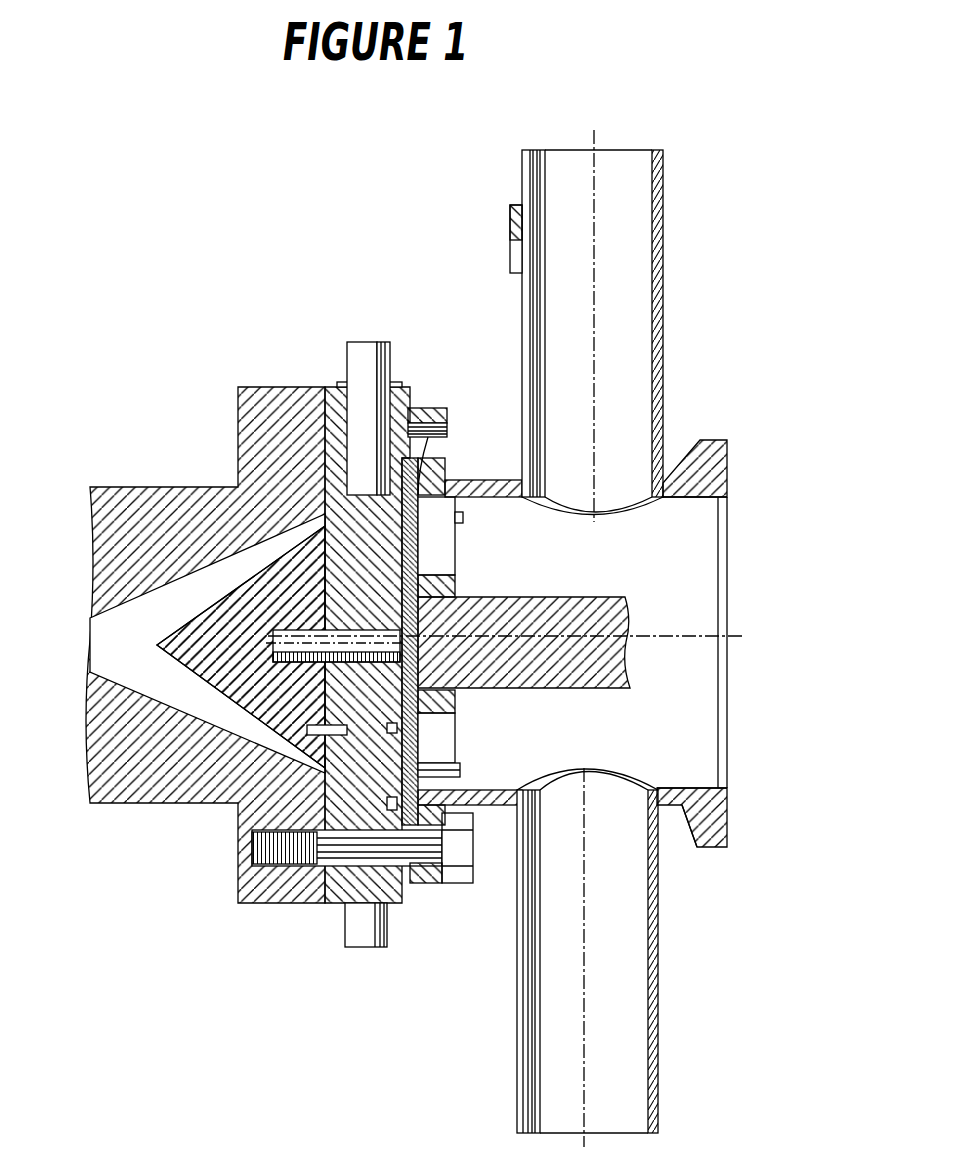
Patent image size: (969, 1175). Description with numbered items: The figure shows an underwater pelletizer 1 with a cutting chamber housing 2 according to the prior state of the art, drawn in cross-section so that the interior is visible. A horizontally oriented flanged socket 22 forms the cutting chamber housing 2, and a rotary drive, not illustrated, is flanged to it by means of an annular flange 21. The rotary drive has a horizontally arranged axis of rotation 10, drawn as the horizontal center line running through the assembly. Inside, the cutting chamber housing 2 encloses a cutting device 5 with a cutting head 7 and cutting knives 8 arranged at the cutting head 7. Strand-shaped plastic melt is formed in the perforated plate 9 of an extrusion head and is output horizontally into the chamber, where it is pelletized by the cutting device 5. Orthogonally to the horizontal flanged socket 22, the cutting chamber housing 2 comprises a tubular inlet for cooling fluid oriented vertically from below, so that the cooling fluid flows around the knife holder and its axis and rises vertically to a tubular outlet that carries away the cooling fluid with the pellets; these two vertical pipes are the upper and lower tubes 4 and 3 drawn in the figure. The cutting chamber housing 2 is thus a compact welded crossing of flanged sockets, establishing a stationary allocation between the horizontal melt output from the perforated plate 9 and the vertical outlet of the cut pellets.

The underwater pelletizer 1 is at (440, 226).
The cutting chamber housing 2 is at (670, 473).
The lower pipe 3 is at (633, 1022).
The upper pipe 4 is at (643, 270).
The cutting device 5 is at (470, 600).
The cutting head 7 is at (440, 660).
The cutting knives 8 is at (448, 522).
The perforated plate 9 is at (343, 437).
The axis of rotation 10 is at (675, 642).
The annular flange 21 is at (712, 840).
The flanged socket 22 is at (485, 492).